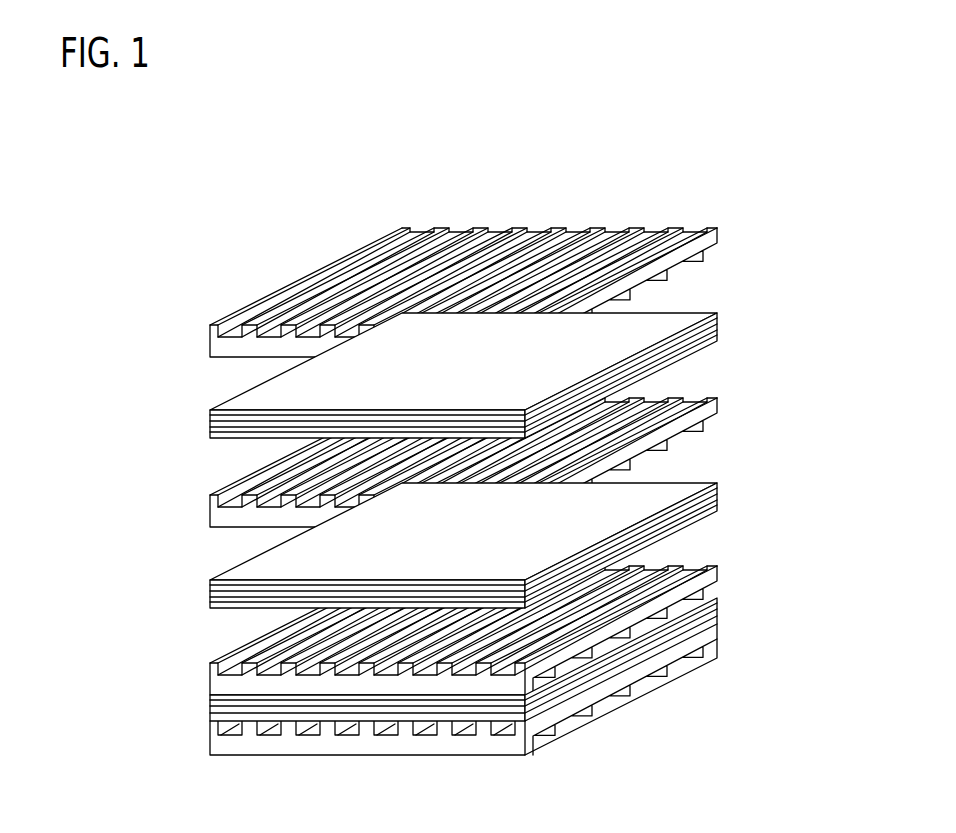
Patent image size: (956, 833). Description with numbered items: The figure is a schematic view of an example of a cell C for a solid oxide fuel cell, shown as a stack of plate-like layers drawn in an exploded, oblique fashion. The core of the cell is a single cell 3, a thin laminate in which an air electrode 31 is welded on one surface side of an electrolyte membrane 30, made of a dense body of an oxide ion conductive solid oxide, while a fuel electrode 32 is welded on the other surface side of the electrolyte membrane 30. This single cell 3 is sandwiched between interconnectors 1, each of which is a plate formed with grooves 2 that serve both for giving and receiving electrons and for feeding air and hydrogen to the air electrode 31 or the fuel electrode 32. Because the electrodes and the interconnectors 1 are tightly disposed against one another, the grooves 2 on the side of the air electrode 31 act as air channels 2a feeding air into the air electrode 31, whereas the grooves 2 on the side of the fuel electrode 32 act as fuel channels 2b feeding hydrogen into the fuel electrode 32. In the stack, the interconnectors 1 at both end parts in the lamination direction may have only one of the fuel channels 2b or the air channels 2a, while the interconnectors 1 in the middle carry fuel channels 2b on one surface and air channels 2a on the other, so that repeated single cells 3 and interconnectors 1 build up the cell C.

The cell for solid oxide fuel cell C is at (192, 293).
The interconnector 1 is at (479, 489).
The grooves 2 is at (510, 440).
The air channels 2a is at (783, 226).
The fuel channels 2b is at (712, 231).
The single cell 3 is at (417, 517).
The air electrode 31 is at (210, 413).
The electrolyte membrane 30 is at (210, 425).
The fuel electrode 32 is at (143, 372).